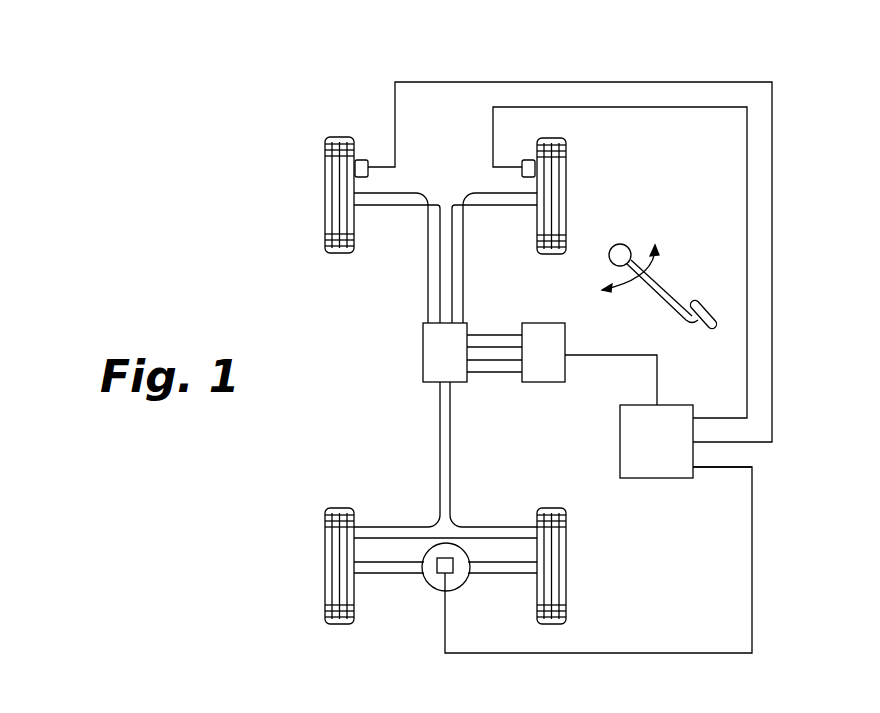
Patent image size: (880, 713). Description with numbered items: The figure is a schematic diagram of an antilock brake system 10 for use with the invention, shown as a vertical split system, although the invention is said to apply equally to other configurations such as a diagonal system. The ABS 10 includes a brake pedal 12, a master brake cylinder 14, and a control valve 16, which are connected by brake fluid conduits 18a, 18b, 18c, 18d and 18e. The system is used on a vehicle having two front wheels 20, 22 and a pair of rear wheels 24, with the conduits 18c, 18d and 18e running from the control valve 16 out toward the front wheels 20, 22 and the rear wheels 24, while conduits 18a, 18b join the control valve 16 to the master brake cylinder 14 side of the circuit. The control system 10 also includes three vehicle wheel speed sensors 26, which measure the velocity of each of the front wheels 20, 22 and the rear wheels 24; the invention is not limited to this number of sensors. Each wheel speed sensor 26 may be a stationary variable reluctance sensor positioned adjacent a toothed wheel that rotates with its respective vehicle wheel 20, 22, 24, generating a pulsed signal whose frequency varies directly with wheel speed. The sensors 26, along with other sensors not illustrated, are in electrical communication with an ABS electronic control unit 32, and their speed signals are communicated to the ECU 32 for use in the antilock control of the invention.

The antilock brake system 10 is at (298, 117).
The brake pedal 12 is at (663, 290).
The master brake cylinder 14 is at (620, 436).
The control valve 16 is at (423, 357).
The brake fluid conduit 18a is at (505, 334).
The brake fluid conduit 18b is at (498, 374).
The brake fluid conduit 18c is at (463, 293).
The brake fluid conduit 18d is at (428, 295).
The brake fluid conduit 18e is at (440, 435).
The front wheel 20 is at (566, 185).
The front wheel 22 is at (325, 195).
The rear wheels 24 is at (325, 562).
The wheel speed sensors 26 is at (363, 158).
The ABS electronic control unit 32 is at (673, 478).